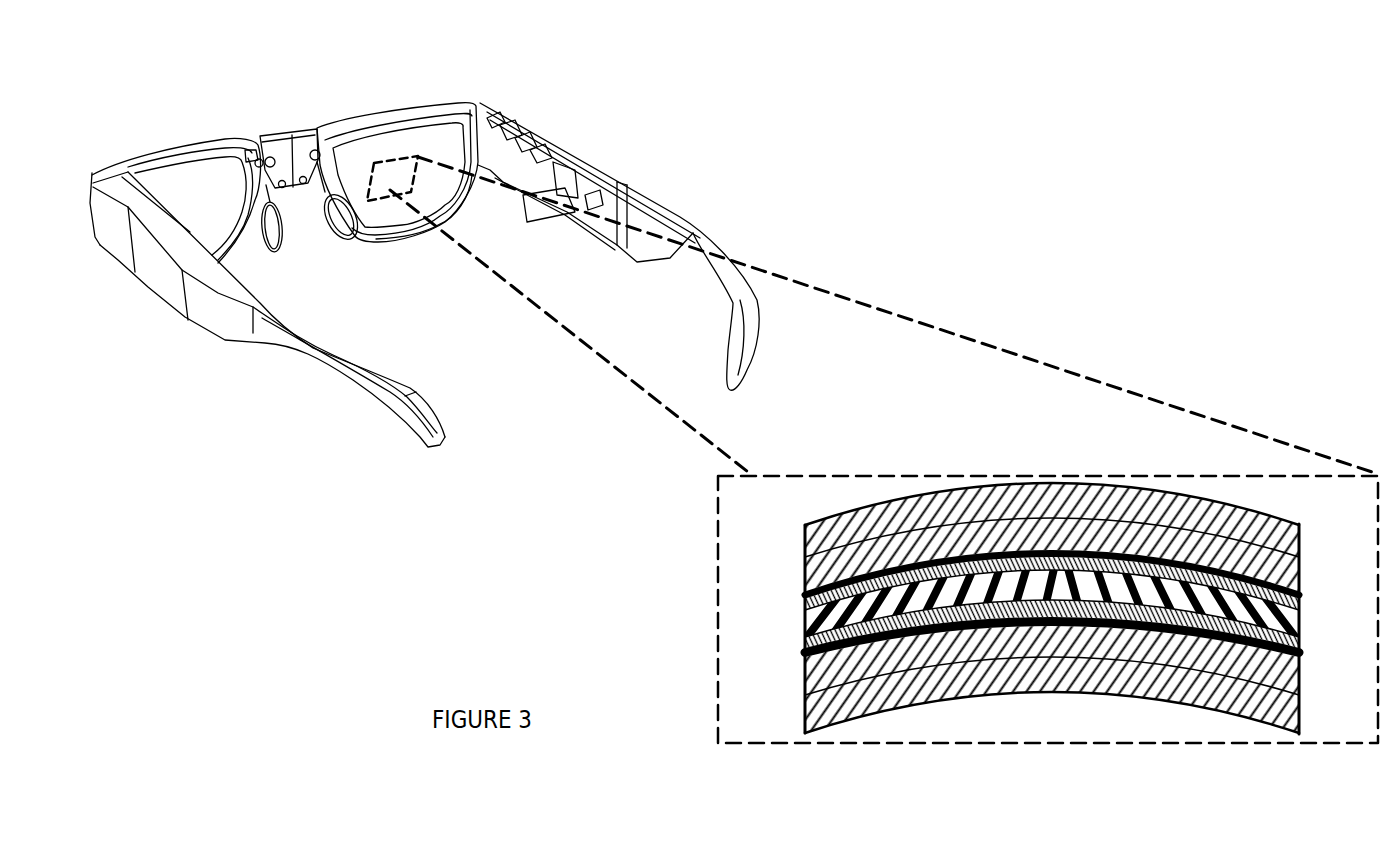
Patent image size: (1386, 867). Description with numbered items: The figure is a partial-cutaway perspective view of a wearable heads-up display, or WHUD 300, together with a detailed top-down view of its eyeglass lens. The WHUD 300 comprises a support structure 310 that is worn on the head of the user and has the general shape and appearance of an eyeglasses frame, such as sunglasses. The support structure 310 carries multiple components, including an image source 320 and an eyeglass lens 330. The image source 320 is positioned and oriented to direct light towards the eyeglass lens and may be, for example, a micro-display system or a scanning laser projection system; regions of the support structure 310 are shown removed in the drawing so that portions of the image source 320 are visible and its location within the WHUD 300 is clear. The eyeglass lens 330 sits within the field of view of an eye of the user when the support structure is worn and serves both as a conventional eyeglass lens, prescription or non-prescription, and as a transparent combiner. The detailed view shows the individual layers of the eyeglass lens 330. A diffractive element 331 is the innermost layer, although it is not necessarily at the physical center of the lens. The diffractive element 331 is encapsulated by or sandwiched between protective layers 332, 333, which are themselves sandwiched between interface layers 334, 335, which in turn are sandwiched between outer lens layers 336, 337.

The WHUD 300 is at (214, 93).
The support structure 310 is at (163, 293).
The image source 320 is at (645, 181).
The eyeglass lens 330 is at (388, 212).
The diffractive element 331 is at (1299, 630).
The protective layer 332 is at (805, 603).
The protective layer 333 is at (805, 650).
The interface layer 334 is at (1299, 577).
The interface layer 335 is at (1299, 678).
The lens layer 336 is at (805, 538).
The lens layer 337 is at (805, 713).